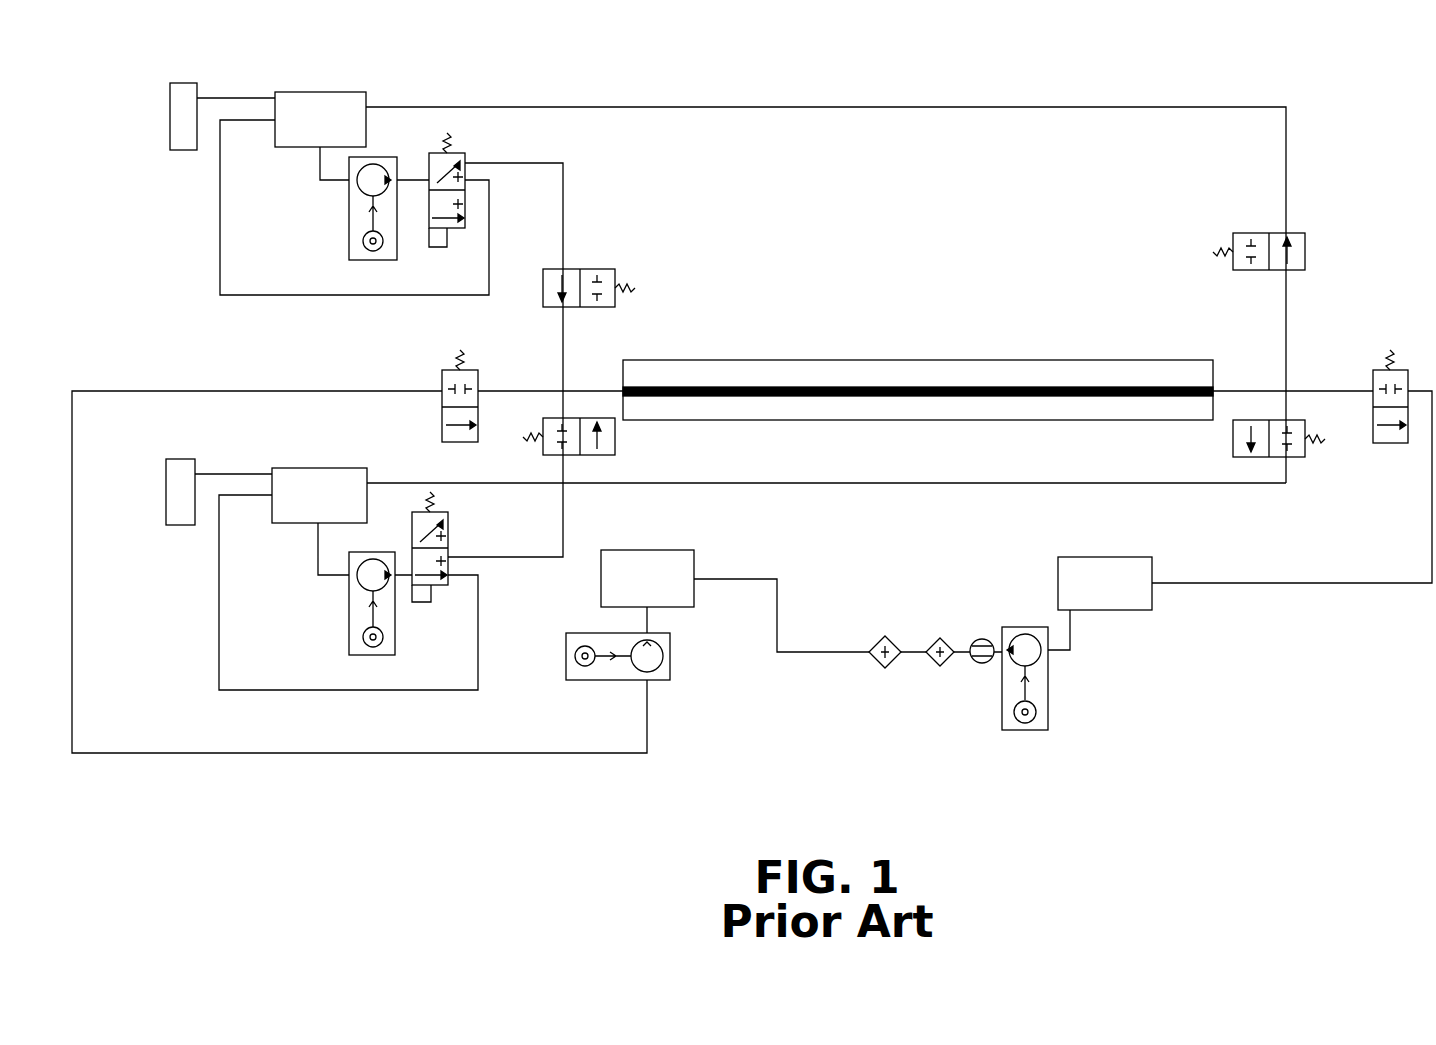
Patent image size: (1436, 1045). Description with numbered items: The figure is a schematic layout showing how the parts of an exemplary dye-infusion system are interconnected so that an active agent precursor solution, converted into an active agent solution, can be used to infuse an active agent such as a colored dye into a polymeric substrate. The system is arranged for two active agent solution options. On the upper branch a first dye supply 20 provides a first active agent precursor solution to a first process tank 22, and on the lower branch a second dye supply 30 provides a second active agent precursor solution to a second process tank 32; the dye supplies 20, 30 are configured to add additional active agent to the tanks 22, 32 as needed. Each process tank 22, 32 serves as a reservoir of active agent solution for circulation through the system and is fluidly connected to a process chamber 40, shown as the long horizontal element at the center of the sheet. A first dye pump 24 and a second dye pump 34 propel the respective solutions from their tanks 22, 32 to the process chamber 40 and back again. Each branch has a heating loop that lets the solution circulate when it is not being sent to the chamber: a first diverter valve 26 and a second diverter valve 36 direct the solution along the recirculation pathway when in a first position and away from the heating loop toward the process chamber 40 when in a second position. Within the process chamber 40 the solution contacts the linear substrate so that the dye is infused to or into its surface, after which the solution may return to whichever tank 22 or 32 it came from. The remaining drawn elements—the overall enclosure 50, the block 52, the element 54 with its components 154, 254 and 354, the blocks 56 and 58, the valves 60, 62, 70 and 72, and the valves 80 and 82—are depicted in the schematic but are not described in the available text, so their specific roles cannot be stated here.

The first dye supply 20 is at (168, 118).
The first process tank 22 is at (322, 92).
The first dye pump 24 is at (349, 222).
The first diverter valve 26 is at (452, 228).
The second dye supply 30 is at (165, 497).
The second process tank 32 is at (310, 468).
The second dye pump 34 is at (349, 617).
The second diverter valve 36 is at (447, 585).
The process chamber 40 is at (953, 370).
The hydraulic system 50 is at (770, 734).
The supply controller 52 is at (1135, 595).
The filter assembly 54 is at (917, 646).
The return controller 56 is at (663, 550).
The return motor pump 58 is at (663, 677).
The first directional valve 60 is at (590, 269).
The second directional valve 62 is at (1262, 233).
The third directional valve 70 is at (617, 437).
The fourth directional valve 72 is at (1295, 457).
The first relief valve 80 is at (440, 400).
The second relief valve 82 is at (1385, 443).
The second filter 154 is at (940, 668).
The first filter 254 is at (873, 668).
The supply pump 354 is at (1037, 730).